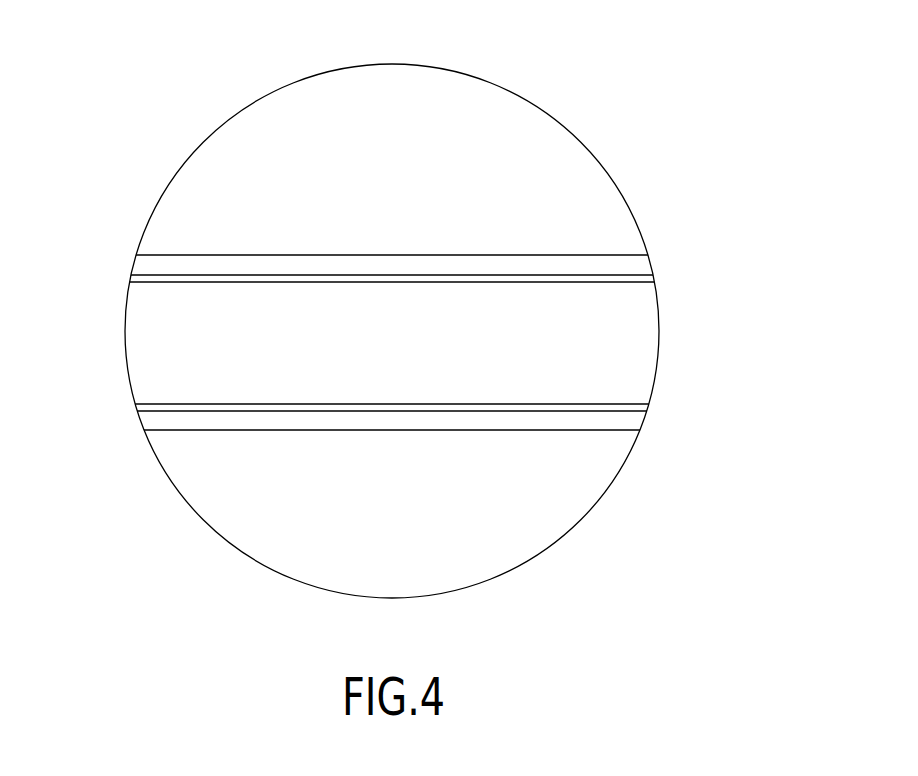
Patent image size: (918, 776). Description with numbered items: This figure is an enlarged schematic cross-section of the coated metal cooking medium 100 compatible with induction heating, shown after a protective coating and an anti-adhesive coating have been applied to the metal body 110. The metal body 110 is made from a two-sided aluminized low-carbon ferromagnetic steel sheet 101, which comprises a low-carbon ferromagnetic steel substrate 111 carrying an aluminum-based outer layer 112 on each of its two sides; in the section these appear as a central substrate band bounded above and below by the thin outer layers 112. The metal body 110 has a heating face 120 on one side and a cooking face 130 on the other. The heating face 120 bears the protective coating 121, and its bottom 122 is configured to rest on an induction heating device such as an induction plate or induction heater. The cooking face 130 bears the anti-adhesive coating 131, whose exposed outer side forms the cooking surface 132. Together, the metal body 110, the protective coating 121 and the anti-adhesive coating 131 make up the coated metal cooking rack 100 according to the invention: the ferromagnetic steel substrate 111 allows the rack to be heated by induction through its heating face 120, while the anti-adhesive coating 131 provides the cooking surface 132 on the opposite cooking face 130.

The coated metal induction heating-compatible cooking medium 100 is at (427, 330).
The two-sided aluminized low-carbon ferromagnetic steel sheet 101 is at (440, 331).
The metal body 110 is at (454, 310).
The low-carbon ferromagnetic steel substrate 111 is at (421, 385).
The aluminum-based outer layer 112 is at (412, 310).
The heating face 120 is at (400, 527).
The protective coating 121 is at (344, 527).
The bottom 122 is at (400, 516).
The cooking face 130 is at (400, 152).
The anti-adhesive coating 131 is at (400, 162).
The cooking surface 132 is at (400, 142).